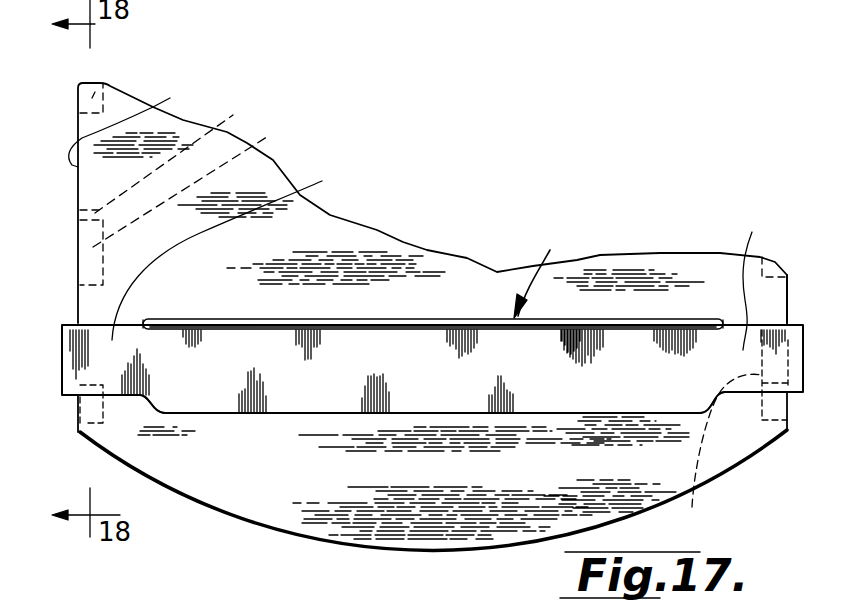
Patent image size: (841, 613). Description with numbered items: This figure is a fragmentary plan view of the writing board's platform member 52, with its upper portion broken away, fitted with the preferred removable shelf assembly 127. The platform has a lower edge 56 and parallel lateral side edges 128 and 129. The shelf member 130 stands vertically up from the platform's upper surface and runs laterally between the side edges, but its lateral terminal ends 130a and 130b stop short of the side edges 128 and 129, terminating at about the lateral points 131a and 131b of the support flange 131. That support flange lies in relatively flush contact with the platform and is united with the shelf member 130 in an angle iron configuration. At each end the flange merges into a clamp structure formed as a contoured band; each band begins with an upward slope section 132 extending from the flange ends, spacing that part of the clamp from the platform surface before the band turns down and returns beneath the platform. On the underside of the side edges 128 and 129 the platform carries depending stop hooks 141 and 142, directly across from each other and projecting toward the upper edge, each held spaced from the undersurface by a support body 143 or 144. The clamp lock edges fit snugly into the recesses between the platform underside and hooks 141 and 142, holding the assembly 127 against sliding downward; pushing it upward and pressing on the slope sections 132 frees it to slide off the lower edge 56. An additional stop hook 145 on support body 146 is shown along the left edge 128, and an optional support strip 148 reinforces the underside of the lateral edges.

The platform member 52 is at (462, 475).
The lower edge of the platform member 56 is at (380, 548).
The removable shelf assembly 127 is at (543, 273).
The lateral side edge 128 is at (428, 203).
The lateral side edge 129 is at (787, 283).
The shelf member 130 is at (410, 323).
The lateral terminal end of the shelf member 130a is at (145, 320).
The lateral terminal end of the shelf member 130b is at (722, 318).
The support flange 131 is at (292, 392).
The lateral end of the support flange 131a is at (140, 397).
The lateral end of the support flange 131b is at (723, 395).
The upward slope section 132 is at (449, 261).
The stop hook 141 is at (66, 402).
The support body 143 is at (87, 432).
The stop hook 142 is at (718, 453).
The support body 144 is at (780, 437).
The stop hook 145 is at (171, 160).
The support body 146 is at (270, 135).
The support strip 148 is at (108, 80).